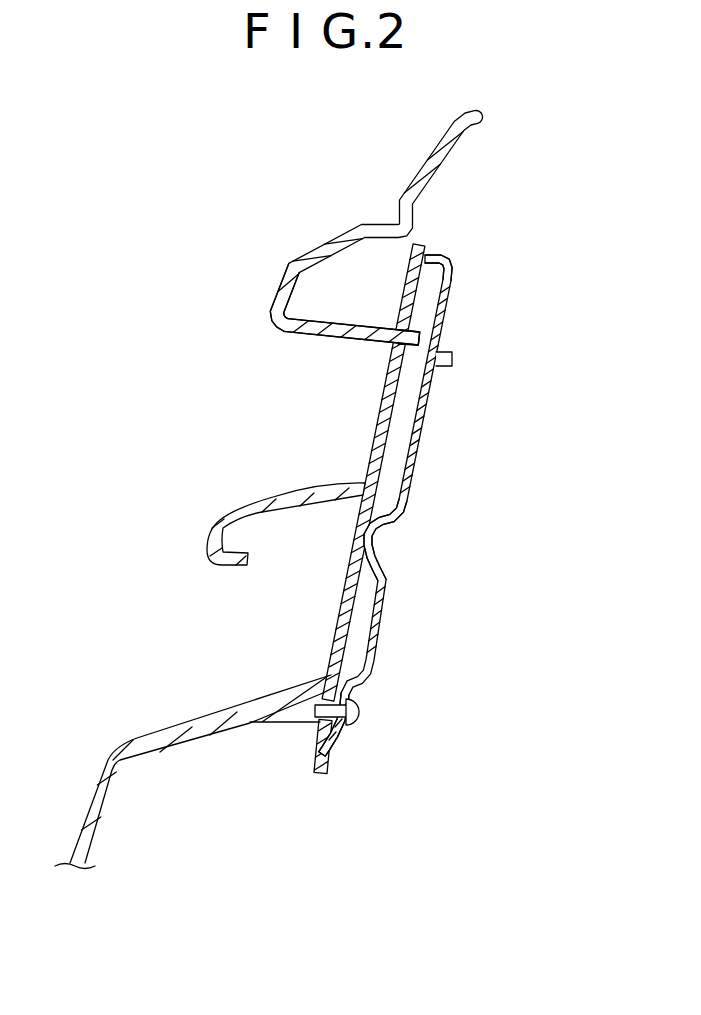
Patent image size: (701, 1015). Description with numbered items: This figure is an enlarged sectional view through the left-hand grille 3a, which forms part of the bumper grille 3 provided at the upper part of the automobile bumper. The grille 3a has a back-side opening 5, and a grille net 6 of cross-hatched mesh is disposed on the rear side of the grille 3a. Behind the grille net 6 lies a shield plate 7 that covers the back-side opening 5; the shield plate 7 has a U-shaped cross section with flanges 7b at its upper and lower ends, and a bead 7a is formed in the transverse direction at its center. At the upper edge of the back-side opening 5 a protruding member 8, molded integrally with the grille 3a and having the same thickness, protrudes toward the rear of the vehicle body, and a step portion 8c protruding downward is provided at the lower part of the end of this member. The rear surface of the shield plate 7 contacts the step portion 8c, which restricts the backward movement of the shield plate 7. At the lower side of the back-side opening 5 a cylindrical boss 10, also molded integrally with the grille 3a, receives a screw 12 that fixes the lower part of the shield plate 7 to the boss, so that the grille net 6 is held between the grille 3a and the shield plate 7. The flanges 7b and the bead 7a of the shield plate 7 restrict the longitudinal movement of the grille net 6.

The bumper grille 3 is at (433, 143).
The grille 3a is at (277, 330).
The back-side opening 5 is at (367, 347).
The grille net 6 is at (333, 613).
The shield plate 7 is at (421, 442).
The bead 7a is at (366, 543).
The flanges 7b is at (427, 255).
The protruding member 8 is at (402, 337).
The step portion 8c is at (452, 357).
The cylindrical boss 10 is at (283, 722).
The screw 12 is at (360, 712).